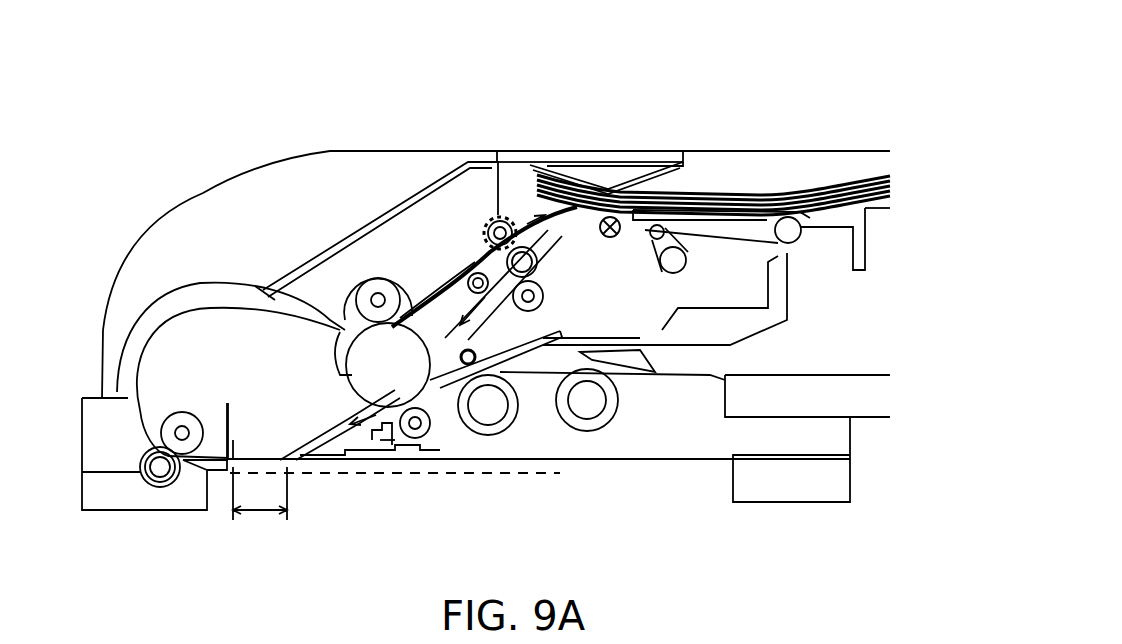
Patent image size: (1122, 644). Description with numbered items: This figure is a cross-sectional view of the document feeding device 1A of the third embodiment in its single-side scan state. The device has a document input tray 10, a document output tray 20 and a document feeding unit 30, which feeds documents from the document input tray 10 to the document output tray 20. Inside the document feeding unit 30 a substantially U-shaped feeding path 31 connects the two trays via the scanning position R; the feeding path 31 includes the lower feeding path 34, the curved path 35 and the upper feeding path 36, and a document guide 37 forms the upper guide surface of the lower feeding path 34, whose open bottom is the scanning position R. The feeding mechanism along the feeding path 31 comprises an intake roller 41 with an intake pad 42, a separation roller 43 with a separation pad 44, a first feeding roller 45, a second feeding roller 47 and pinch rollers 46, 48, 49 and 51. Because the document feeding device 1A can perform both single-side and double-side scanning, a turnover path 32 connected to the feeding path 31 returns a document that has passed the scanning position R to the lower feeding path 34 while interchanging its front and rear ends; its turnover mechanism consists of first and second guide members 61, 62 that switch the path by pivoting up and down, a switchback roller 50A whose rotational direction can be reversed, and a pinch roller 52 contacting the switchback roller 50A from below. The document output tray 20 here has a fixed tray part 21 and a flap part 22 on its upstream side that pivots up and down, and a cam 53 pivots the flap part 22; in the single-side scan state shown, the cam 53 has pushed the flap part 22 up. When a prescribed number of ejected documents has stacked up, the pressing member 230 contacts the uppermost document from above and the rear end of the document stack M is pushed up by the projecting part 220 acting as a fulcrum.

The document feeding device 1A is at (280, 57).
The document feeding unit 30 is at (242, 120).
The feeding path 31 is at (151, 288).
The curved path 35 is at (120, 341).
The upper feeding path 36 is at (260, 282).
The document guide 37 is at (307, 447).
The first feeding roller 45 is at (350, 388).
The pinch roller 46 is at (417, 440).
The second feeding roller 47 is at (187, 418).
The pinch roller 48 is at (157, 488).
The pinch roller 49 is at (372, 290).
The pinch roller 51 is at (502, 215).
The pinch roller 52 is at (545, 292).
The switchback roller 50A is at (538, 255).
The cam 53 is at (703, 269).
The first guide member 61 is at (440, 300).
The second guide member 62 is at (447, 393).
The turnover path 32 is at (553, 332).
The lower feeding path 34 is at (384, 445).
The intake roller 41 is at (598, 432).
The intake pad 42 is at (617, 353).
The separation roller 43 is at (497, 436).
The separation pad 44 is at (520, 356).
The document input tray 10 is at (880, 456).
The document output tray 20 is at (897, 323).
The tray part 21 is at (883, 242).
The flap part 22 is at (805, 265).
The projecting part 220 is at (632, 236).
The pressing member 230 is at (623, 166).
The document stack M is at (725, 178).
The scanning position R is at (260, 506).